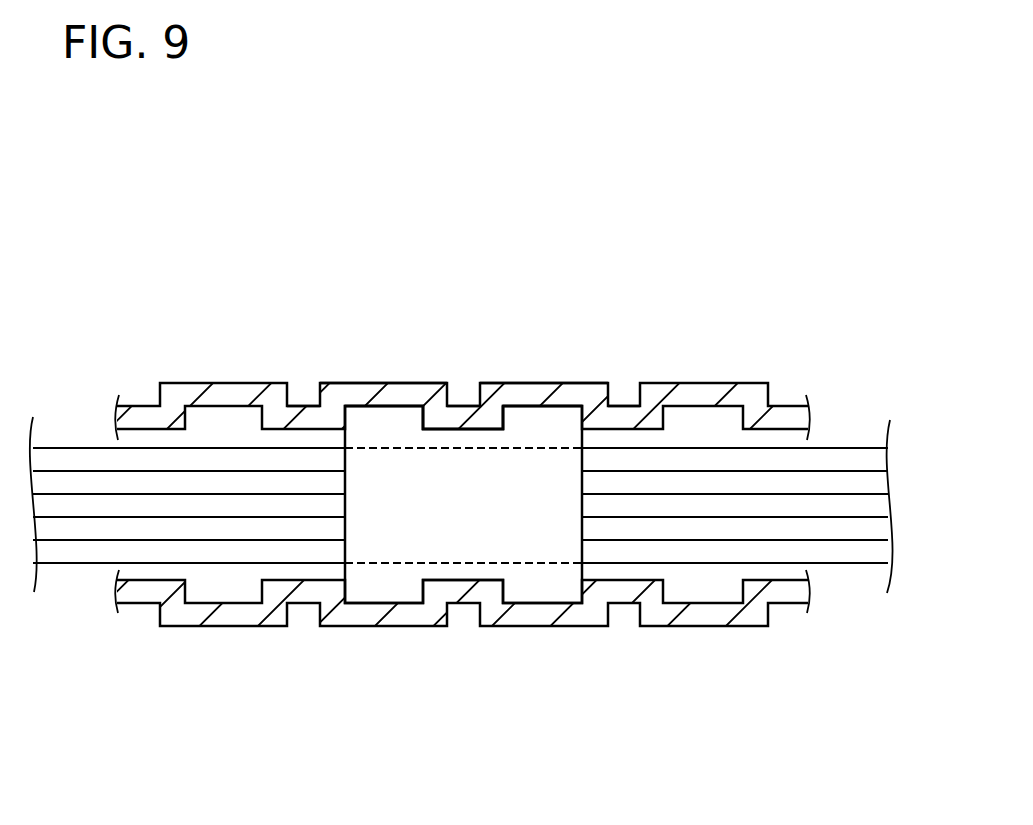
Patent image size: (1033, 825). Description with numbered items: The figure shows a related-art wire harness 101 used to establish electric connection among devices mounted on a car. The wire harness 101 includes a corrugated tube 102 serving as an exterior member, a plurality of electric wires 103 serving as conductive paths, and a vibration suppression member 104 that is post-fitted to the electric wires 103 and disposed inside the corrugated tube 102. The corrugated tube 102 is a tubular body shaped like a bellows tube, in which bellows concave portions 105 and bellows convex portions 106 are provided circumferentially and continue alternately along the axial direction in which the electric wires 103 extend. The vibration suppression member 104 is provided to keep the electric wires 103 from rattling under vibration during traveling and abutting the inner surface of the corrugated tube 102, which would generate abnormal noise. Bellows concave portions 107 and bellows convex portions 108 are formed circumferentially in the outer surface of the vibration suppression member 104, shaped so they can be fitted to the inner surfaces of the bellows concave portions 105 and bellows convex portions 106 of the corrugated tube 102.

The wire harness 101 is at (456, 461).
The corrugated tube 102 is at (232, 627).
The electric wires 103 is at (63, 446).
The vibration suppression member 104 is at (543, 572).
The bellows concave portions 105 is at (303, 406).
The bellows convex portions 106 is at (392, 383).
The bellows concave portions 107 is at (492, 429).
The bellows convex portions 108 is at (408, 406).